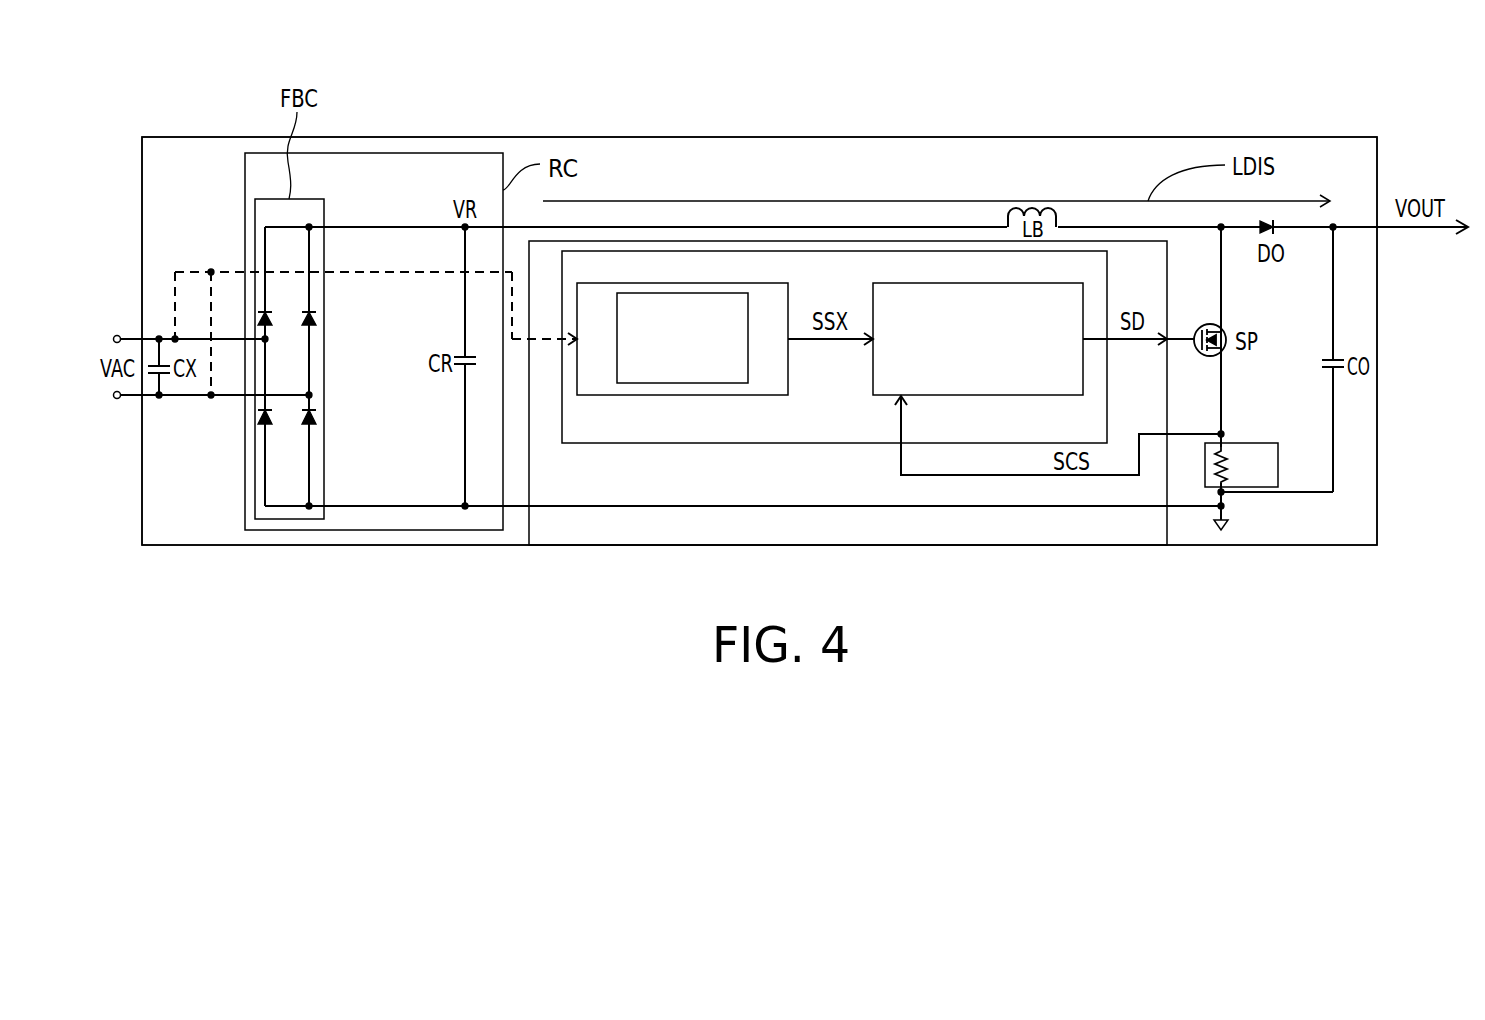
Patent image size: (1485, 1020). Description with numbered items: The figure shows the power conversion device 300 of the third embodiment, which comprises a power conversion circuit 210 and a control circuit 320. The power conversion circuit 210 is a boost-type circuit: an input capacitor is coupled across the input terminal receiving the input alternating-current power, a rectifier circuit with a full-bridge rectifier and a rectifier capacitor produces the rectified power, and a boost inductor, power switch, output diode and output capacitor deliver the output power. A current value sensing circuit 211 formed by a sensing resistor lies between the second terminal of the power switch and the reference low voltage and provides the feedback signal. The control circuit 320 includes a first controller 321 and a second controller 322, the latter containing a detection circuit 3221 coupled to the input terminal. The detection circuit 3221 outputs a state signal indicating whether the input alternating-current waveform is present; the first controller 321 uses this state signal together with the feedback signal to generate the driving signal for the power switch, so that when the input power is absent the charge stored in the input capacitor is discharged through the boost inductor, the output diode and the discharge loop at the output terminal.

The power conversion circuit 210 is at (890, 137).
The current value sensing circuit 211 is at (1278, 465).
The power conversion device 300 is at (1468, 578).
The control circuit 320 is at (588, 445).
The first controller 321 is at (977, 396).
The second controller 322 is at (727, 397).
The detection circuit 3221 is at (685, 293).